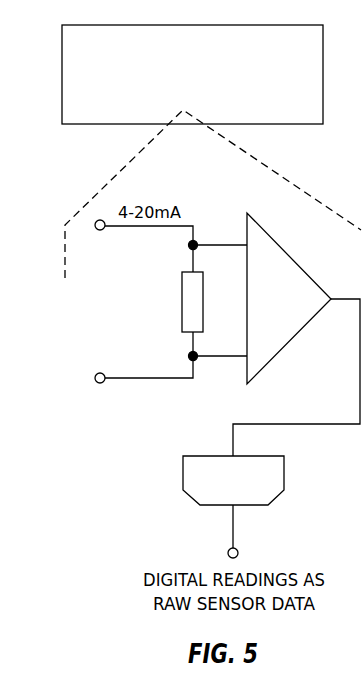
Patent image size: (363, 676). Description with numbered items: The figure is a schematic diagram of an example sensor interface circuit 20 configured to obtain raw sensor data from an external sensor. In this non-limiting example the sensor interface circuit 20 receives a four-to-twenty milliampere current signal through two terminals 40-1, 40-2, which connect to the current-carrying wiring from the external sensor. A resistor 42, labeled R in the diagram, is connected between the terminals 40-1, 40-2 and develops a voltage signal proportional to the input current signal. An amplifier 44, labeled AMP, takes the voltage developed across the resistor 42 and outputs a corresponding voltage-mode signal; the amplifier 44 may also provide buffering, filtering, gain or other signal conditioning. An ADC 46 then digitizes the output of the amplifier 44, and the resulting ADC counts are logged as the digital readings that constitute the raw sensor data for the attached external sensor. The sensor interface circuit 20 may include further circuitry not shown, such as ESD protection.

The sensor interface circuit 20 is at (182, 97).
The terminal 40-1 is at (97, 230).
The terminal 40-2 is at (97, 373).
The resistor 42 is at (182, 319).
The amplifier 44 is at (267, 233).
The ADC 46 is at (183, 472).